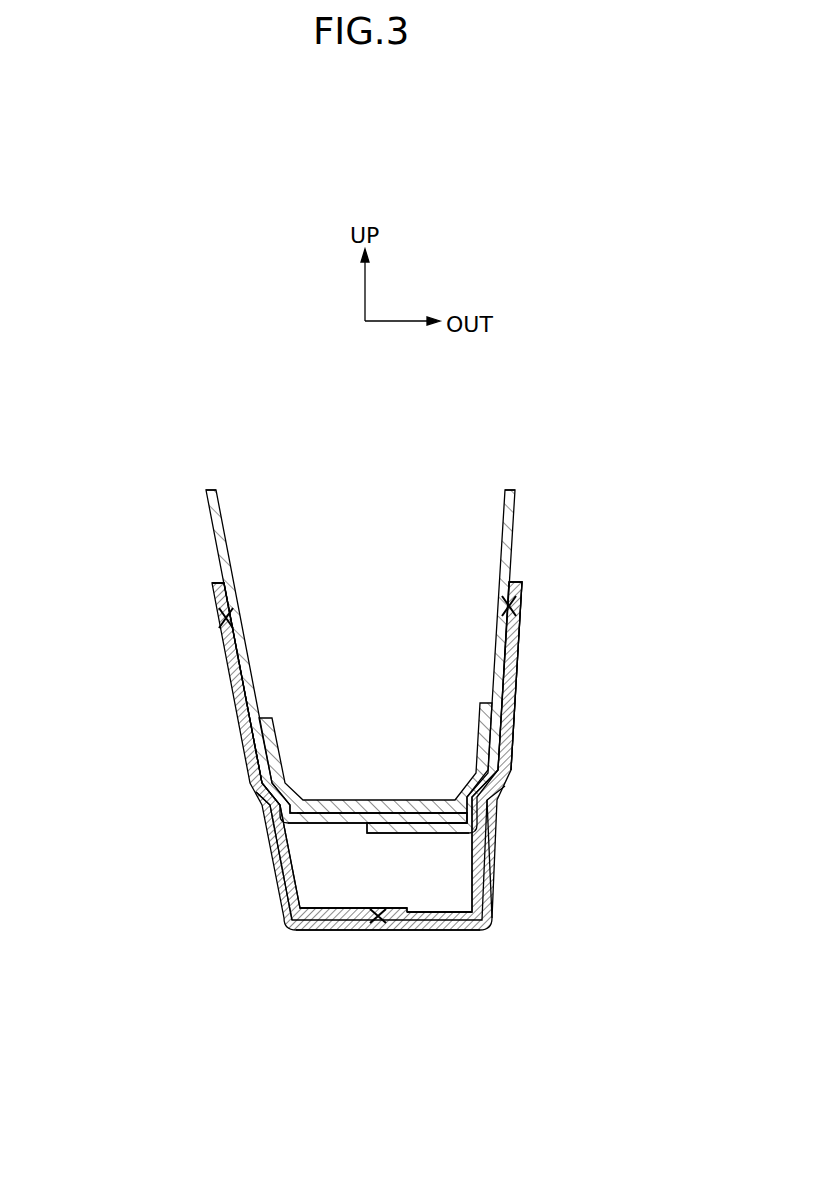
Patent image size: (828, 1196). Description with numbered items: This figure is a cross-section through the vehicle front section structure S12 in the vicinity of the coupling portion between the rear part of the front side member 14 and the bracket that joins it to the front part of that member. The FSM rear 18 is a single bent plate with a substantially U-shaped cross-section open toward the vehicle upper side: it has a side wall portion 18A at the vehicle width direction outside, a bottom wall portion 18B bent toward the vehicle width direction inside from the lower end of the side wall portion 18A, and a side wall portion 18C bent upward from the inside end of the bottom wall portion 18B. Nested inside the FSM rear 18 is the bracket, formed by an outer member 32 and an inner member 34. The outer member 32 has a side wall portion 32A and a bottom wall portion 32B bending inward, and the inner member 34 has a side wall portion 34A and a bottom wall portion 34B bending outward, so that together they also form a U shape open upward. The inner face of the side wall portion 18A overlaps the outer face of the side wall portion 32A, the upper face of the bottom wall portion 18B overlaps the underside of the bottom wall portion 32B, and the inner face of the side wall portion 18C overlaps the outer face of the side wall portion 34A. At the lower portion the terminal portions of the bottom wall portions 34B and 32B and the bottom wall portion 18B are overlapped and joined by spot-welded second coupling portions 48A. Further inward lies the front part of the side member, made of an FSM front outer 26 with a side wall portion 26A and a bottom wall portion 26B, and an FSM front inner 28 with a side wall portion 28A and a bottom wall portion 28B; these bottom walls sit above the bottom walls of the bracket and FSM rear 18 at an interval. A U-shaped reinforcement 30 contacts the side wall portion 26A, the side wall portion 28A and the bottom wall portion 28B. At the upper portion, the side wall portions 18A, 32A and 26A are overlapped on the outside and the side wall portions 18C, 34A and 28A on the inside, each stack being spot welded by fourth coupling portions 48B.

The front side member 14 is at (552, 489).
The FSM rear 18 is at (381, 791).
The side wall portion 18A is at (497, 828).
The bottom wall portion 18B is at (318, 933).
The side wall portion 18C is at (262, 800).
The FSM front outer 26 is at (516, 661).
The side wall portion 26A is at (508, 545).
The bottom wall portion 26B is at (418, 823).
The FSM front inner 28 is at (267, 656).
The side wall portion 28A is at (214, 506).
The bottom wall portion 28B is at (375, 782).
The reinforcement 30 is at (282, 755).
The outer member 32 is at (473, 750).
The side wall portion 32A is at (520, 652).
The bottom wall portion 32B is at (424, 880).
The inner member 34 is at (281, 748).
The side wall portion 34A is at (222, 652).
The bottom wall portion 34B is at (305, 898).
The second coupling portion 48A is at (378, 928).
The fourth coupling portion 48B is at (220, 620).
The vehicle front section structure S12 is at (447, 958).